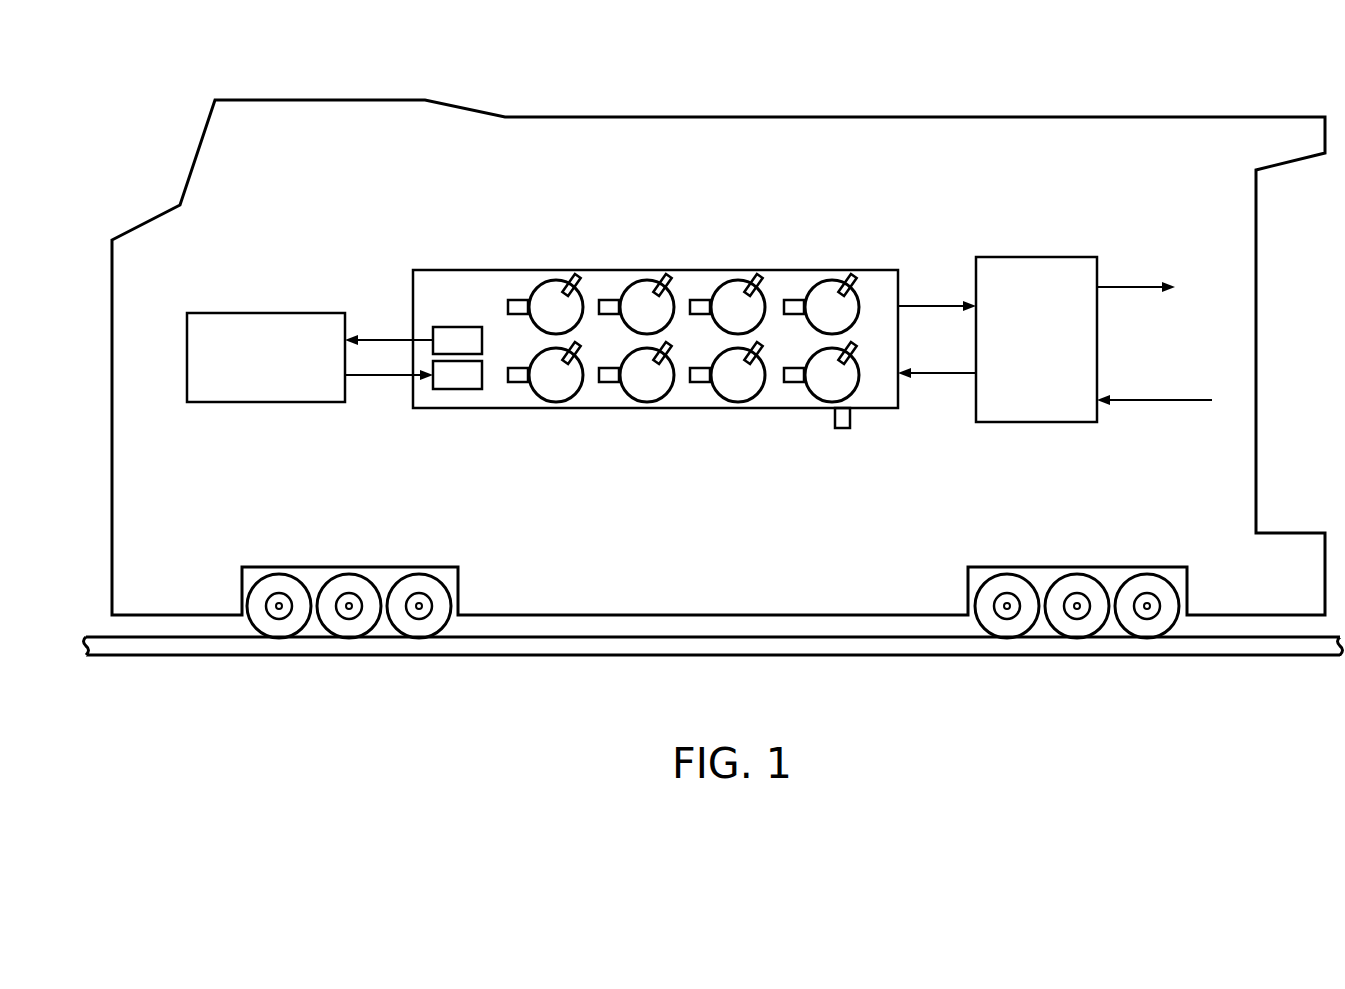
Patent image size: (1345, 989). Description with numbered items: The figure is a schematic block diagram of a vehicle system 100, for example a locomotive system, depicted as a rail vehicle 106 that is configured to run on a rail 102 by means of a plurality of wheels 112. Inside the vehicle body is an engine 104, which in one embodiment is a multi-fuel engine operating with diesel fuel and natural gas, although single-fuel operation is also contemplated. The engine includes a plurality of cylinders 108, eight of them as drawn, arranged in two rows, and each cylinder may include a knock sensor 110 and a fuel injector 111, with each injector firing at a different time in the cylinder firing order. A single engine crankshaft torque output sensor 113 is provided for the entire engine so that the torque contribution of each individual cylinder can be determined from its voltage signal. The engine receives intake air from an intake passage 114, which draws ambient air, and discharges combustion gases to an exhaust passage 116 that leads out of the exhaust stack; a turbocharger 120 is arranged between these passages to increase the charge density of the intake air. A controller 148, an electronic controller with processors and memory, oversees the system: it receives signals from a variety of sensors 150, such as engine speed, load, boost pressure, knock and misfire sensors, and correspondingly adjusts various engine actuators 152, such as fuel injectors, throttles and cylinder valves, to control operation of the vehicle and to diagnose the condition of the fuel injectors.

The vehicle system 100 is at (1163, 56).
The rail 102 is at (1255, 656).
The engine 104 is at (428, 270).
The vehicle 106 is at (1007, 117).
The cylinders 108 is at (540, 318).
The knock sensor 110 is at (653, 330).
The fuel injector 111 is at (745, 328).
The wheels 112 is at (444, 596).
The engine crankshaft torque output sensor 113 is at (843, 430).
The intake passage 114 is at (1130, 402).
The exhaust passage 116 is at (1113, 288).
The turbocharger 120 is at (1021, 365).
The controller 148 is at (250, 383).
The sensors 150 is at (413, 340).
The engine actuators 152 is at (413, 375).